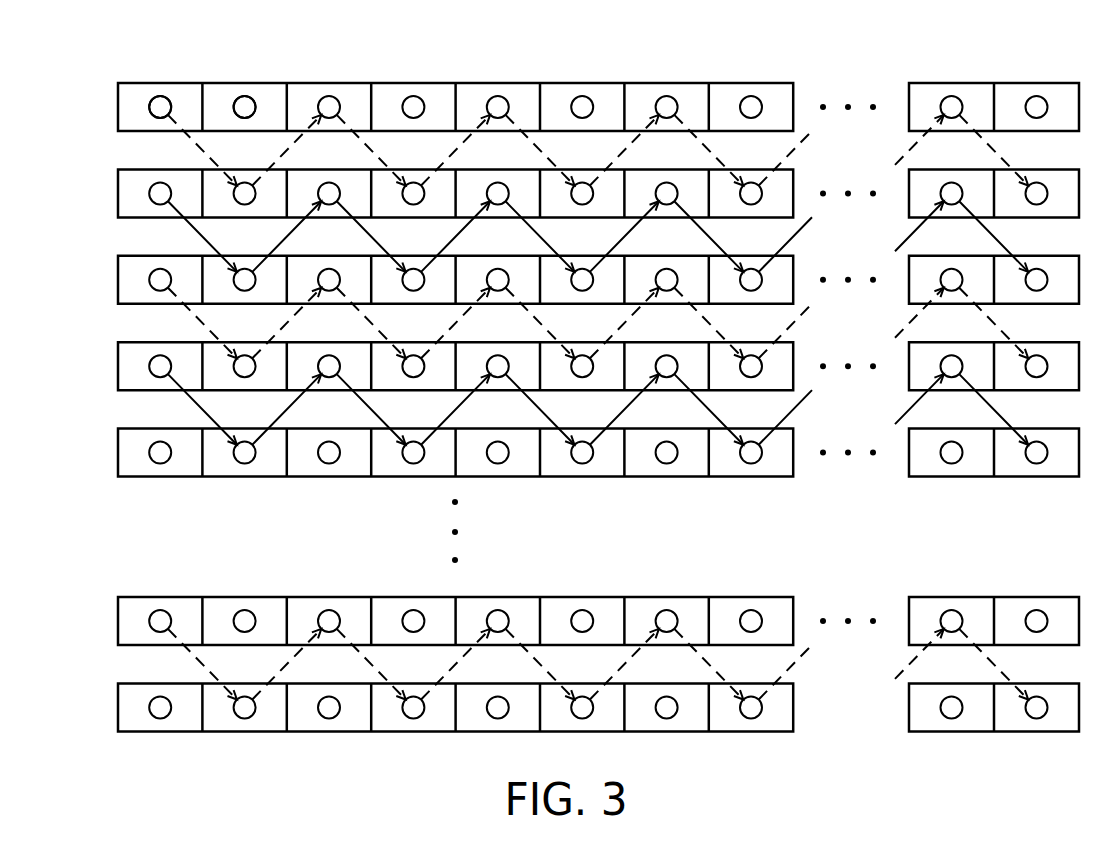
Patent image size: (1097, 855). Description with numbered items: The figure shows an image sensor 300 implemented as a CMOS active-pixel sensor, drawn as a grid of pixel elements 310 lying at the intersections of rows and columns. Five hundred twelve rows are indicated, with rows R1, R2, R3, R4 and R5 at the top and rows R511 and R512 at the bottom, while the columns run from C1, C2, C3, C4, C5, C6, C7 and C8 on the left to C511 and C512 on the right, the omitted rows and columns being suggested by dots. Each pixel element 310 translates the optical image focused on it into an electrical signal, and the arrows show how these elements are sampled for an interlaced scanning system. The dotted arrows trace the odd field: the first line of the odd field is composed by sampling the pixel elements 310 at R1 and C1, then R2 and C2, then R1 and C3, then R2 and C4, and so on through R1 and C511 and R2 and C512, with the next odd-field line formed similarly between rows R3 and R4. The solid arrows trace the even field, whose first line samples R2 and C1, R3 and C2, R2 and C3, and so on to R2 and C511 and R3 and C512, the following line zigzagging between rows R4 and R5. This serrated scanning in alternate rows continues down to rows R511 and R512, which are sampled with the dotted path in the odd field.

The image sensor 300 is at (575, 400).
The pixel element 310 is at (163, 107).
The row R1 is at (580, 107).
The row R2 is at (580, 193).
The row R3 is at (580, 280).
The row R4 is at (580, 366).
The row R5 is at (580, 453).
The row R511 is at (570, 621).
The row R512 is at (570, 707).
The column C1 is at (160, 381).
The column C2 is at (244, 381).
The column C3 is at (329, 381).
The column C4 is at (413, 381).
The column C5 is at (497, 381).
The column C6 is at (582, 381).
The column C7 is at (666, 381).
The column C8 is at (751, 381).
The column C511 is at (962, 381).
The column C512 is at (1048, 381).